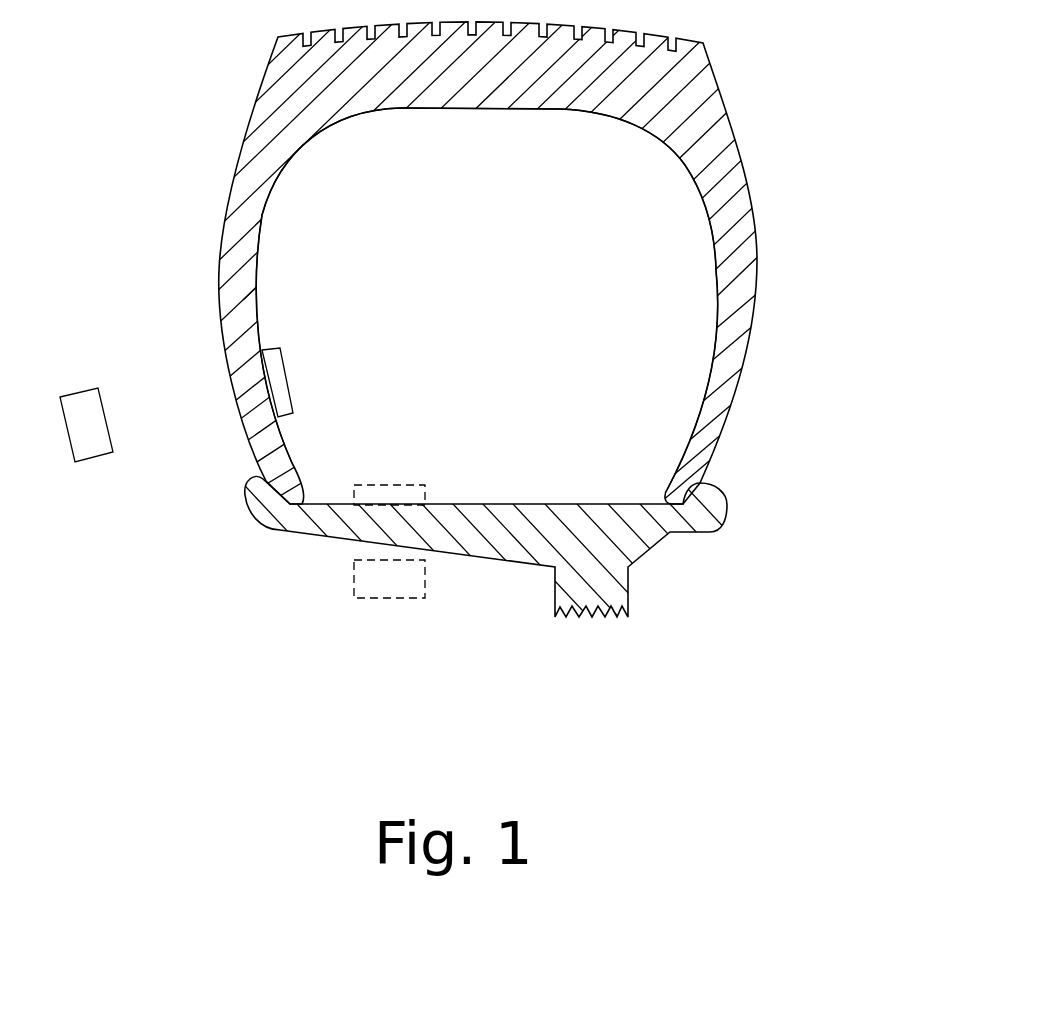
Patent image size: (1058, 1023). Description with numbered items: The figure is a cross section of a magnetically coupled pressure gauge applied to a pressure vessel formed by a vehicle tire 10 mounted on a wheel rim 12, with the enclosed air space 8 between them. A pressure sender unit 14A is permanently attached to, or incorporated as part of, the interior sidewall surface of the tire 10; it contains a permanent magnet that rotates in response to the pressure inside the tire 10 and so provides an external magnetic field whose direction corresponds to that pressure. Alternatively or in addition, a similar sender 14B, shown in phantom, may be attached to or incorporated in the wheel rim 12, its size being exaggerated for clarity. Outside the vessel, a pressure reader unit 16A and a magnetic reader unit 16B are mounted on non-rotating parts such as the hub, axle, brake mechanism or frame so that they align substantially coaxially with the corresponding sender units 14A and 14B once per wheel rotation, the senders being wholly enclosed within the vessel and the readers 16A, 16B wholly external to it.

The vehicle tire 10 is at (740, 143).
The tire cavity 8 is at (578, 302).
The wheel rim 12 is at (647, 555).
The pressure sender unit 14A is at (288, 382).
The sender 14B is at (390, 485).
The pressure reader unit 16A is at (98, 458).
The magnetic reader unit 16B is at (354, 582).